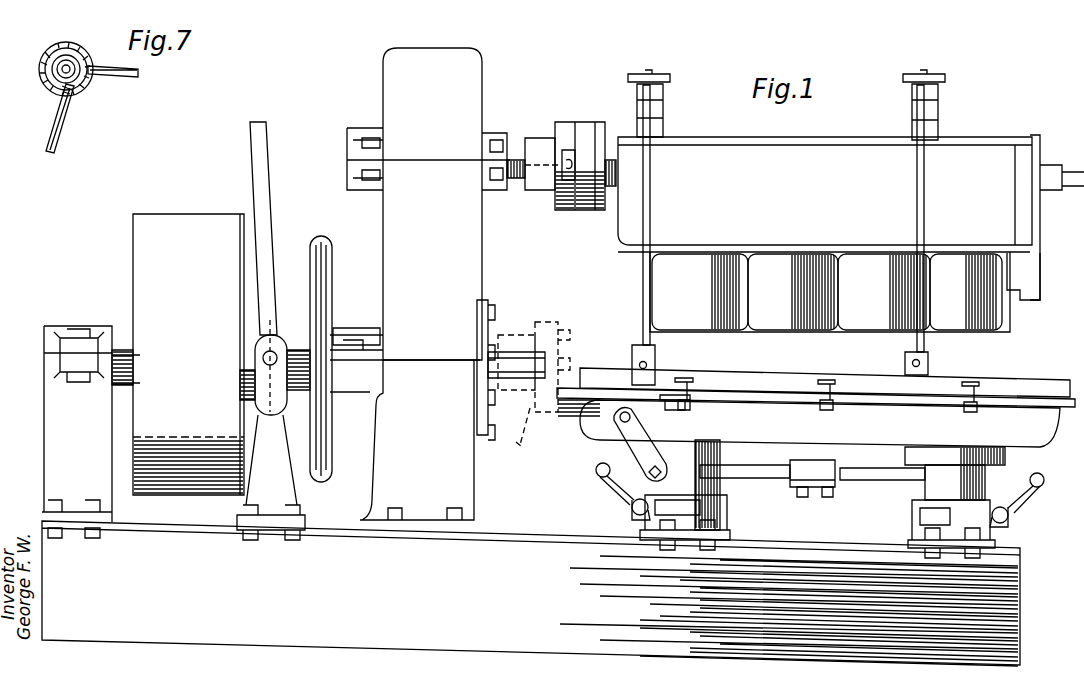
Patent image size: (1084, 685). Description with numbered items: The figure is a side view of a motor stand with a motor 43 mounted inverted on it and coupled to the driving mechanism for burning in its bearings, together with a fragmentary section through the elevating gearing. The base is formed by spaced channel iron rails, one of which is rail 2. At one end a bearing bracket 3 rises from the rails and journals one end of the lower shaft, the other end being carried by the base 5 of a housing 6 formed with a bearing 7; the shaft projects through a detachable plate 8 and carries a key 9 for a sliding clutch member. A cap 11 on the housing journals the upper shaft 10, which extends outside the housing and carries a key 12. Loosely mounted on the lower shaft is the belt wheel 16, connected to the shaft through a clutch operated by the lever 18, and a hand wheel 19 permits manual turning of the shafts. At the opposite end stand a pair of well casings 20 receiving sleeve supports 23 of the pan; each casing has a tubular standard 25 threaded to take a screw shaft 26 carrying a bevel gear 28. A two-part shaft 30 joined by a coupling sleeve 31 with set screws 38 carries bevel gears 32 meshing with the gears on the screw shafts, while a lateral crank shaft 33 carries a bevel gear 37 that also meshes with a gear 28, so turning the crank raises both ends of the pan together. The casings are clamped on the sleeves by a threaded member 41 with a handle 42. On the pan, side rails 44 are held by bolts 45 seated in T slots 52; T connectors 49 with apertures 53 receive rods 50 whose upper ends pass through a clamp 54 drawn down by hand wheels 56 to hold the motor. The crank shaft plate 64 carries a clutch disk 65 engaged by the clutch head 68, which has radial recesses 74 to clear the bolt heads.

In FIG. 1, the channel iron rail 2 is at (531, 593).
In FIG. 1, the bearing bracket 3 is at (50, 428).
In FIG. 1, the housing base 5 is at (474, 483).
In FIG. 1, the housing 6 is at (428, 204).
In FIG. 1, the bearing 7 is at (356, 332).
In FIG. 1, the detachable plate 8 is at (485, 306).
In FIG. 1, the key 9 is at (505, 396).
In FIG. 1, the shaft 10 is at (522, 150).
In FIG. 1, the cap 11 is at (429, 62).
In FIG. 1, the key 12 is at (518, 190).
In FIG. 1, the belt wheel 16 is at (178, 354).
In FIG. 1, the lever 18 is at (266, 170).
In FIG. 1, the hand wheel 19 is at (315, 480).
In FIG. 1, the well casing 20 is at (730, 525).
In FIG. 7, the sleeve support 23 is at (63, 55).
In FIG. 1, the sleeve support 23 is at (842, 485).
In FIG. 1, the tubular standard 25 is at (521, 437).
In FIG. 7, the screw shaft 26 is at (40, 66).
In FIG. 7, the bevel gear 28 is at (72, 62).
In FIG. 7, the shaft part 30 is at (114, 77).
In FIG. 1, the shaft part 30 is at (890, 482).
In FIG. 1, the coupling sleeve 31 is at (836, 488).
In FIG. 7, the bevel gear 32 is at (92, 60).
In FIG. 7, the shaft 33 is at (48, 130).
In FIG. 1, the shaft 33 is at (682, 468).
In FIG. 7, the bevel gear 37 is at (70, 96).
In FIG. 1, the set screws 38 is at (827, 500).
In FIG. 1, the threaded member 41 is at (631, 506).
In FIG. 1, the handle 42 is at (596, 472).
In FIG. 1, the inverted motor 43 is at (851, 233).
In FIG. 1, the side rail 44 is at (1045, 386).
In FIG. 1, the bolts 45 is at (826, 411).
In FIG. 1, the T shaped connector 49 is at (633, 350).
In FIG. 1, the rod 50 is at (651, 205).
In FIG. 1, the T slot 52 is at (695, 380).
In FIG. 1, the aperture 53 is at (655, 362).
In FIG. 1, the clamp 54 is at (665, 125).
In FIG. 1, the hand wheel 56 is at (668, 80).
In FIG. 1, the crank shaft plate 64 is at (609, 130).
In FIG. 1, the clutch disk 65 is at (595, 212).
In FIG. 1, the clutch head 68 is at (566, 212).
In FIG. 1, the radial recess 74 is at (572, 150).